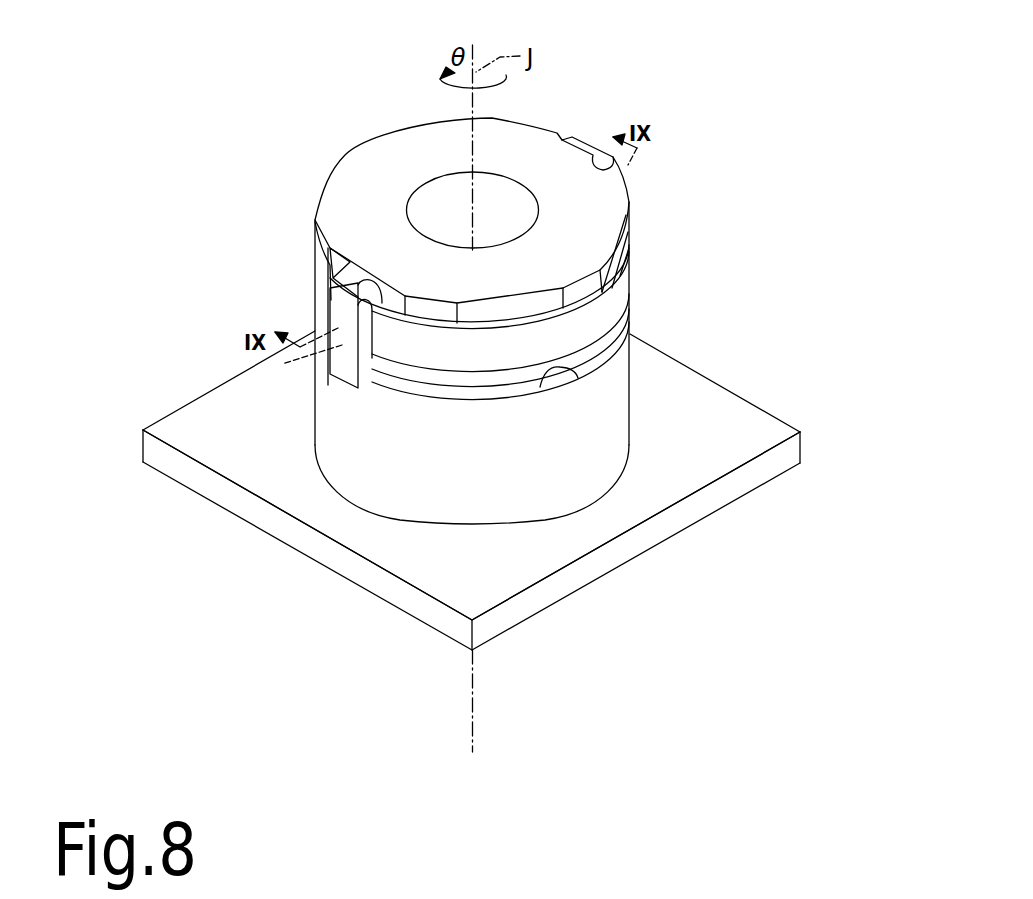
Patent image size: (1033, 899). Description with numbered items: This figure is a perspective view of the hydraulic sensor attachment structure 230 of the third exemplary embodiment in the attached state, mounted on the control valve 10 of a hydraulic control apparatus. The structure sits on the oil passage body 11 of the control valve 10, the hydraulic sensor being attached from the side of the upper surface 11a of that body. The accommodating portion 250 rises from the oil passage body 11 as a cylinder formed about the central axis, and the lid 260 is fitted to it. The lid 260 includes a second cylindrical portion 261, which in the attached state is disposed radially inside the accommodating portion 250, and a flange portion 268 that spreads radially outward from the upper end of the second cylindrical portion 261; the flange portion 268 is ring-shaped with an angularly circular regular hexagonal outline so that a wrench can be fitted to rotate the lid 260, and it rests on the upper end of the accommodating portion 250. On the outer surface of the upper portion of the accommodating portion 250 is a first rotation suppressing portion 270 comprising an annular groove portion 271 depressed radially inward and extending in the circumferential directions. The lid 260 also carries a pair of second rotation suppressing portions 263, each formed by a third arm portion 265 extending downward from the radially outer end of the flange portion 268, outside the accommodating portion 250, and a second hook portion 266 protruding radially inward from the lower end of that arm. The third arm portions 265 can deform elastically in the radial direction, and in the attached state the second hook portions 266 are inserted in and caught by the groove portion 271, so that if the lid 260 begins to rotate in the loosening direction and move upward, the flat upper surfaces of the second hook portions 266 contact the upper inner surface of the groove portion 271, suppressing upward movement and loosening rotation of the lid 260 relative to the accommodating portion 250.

The hydraulic sensor attachment structure 230 is at (683, 104).
The lid 260 is at (625, 176).
The second cylindrical portion 261 is at (530, 177).
The flange portion 268 is at (333, 210).
The second rotation suppressing portion 263 is at (327, 323).
The accommodating portion 250 is at (638, 278).
The third arm portion 265 is at (313, 348).
The second hook portion 266 is at (382, 386).
The groove portion 271 is at (582, 372).
The first rotation suppressing portion 270 is at (625, 497).
The control valve 10 is at (499, 480).
The oil passage body 11 is at (187, 430).
The upper surface 11a is at (745, 446).